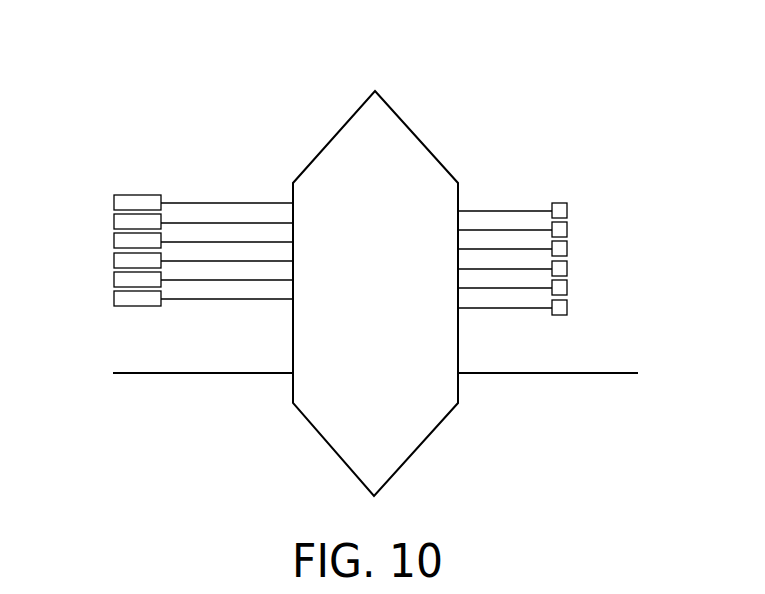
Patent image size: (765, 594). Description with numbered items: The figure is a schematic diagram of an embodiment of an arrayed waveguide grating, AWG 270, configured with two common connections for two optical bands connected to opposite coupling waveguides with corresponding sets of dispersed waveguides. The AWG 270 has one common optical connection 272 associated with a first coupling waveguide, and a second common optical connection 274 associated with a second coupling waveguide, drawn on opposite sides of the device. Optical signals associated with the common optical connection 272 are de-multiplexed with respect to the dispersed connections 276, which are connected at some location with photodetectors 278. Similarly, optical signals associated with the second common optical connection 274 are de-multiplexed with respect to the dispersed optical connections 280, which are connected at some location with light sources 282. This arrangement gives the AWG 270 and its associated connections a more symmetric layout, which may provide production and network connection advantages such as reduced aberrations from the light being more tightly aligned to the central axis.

The AWG 270 is at (429, 148).
The common optical connection 272 is at (210, 373).
The second common optical connection 274 is at (539, 373).
The dispersed connections 276 is at (483, 205).
The photodetectors 278 is at (562, 197).
The dispersed optical connections 280 is at (212, 198).
The light sources 282 is at (137, 190).